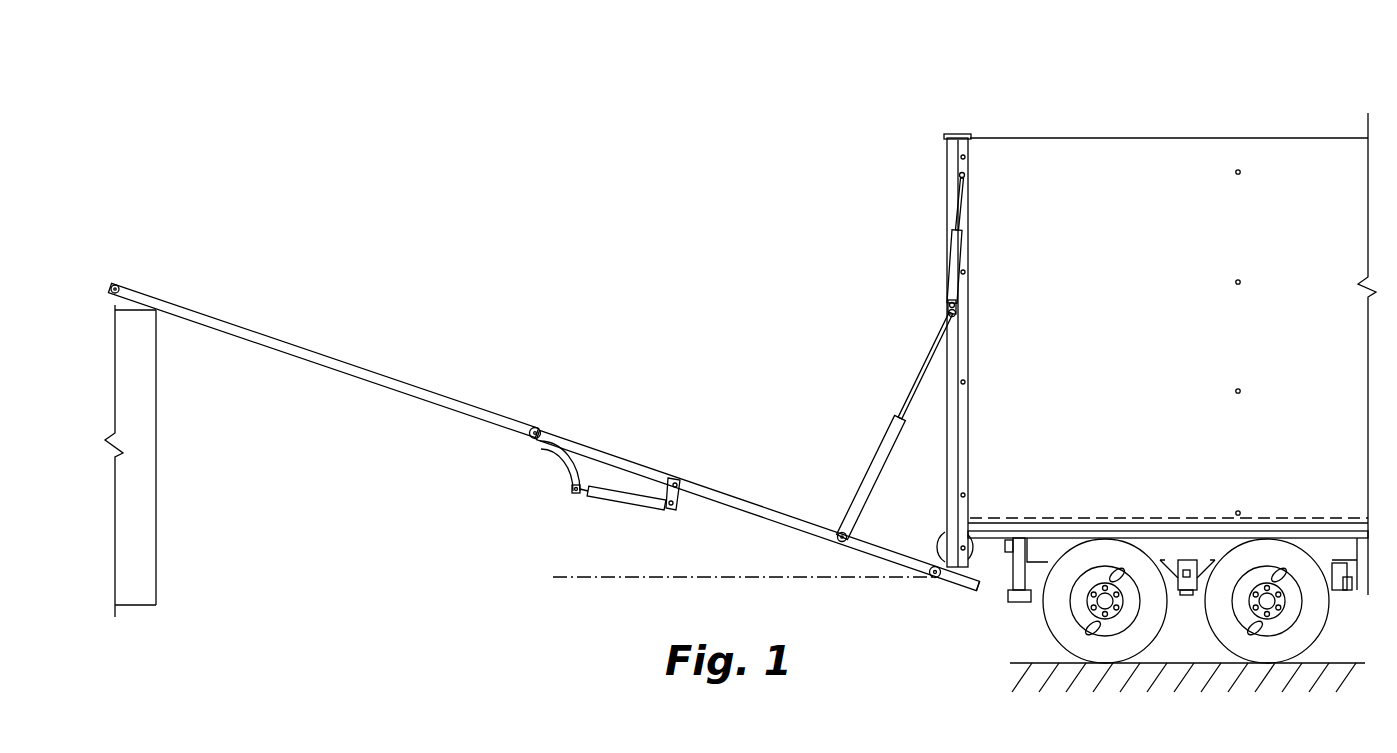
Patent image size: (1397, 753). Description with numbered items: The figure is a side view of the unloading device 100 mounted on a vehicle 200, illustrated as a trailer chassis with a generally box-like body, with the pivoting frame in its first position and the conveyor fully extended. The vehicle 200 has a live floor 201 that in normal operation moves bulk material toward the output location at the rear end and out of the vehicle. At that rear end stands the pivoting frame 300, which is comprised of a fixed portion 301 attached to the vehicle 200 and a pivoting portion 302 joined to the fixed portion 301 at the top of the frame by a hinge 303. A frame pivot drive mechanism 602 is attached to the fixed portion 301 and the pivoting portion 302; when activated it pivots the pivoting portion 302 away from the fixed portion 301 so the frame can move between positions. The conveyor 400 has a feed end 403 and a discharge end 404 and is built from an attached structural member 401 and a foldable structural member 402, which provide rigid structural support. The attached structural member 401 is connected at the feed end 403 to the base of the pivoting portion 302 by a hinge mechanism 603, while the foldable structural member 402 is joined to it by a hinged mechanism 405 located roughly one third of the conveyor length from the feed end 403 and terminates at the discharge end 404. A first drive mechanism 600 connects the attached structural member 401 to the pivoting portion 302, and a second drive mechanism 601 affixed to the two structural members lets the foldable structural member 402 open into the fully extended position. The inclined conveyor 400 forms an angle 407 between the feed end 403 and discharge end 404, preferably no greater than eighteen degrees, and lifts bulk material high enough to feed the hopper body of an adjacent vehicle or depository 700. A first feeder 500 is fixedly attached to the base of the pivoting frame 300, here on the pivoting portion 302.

The unloading device 100 is at (541, 192).
The vehicle 200 is at (1093, 105).
The live floor 201 is at (1177, 516).
The pivoting frame 300 is at (926, 168).
The fixed portion 301 is at (967, 398).
The pivoting portion 302 is at (952, 218).
The hinge 303 is at (953, 133).
The conveyor 400 is at (436, 328).
The attached structural member 401 is at (683, 487).
The foldable structural member 402 is at (330, 360).
The feed end 403 is at (892, 569).
The discharge end 404 is at (132, 282).
The hinged mechanism 405 is at (543, 427).
The angle 407 is at (648, 483).
The first feeder 500 is at (943, 534).
The first drive mechanism 600 is at (880, 453).
The second drive mechanism 601 is at (600, 494).
The frame pivot drive mechanism 602 is at (955, 251).
The hinge mechanism 603 is at (941, 577).
The adjacent vehicle or depository 700 is at (148, 477).